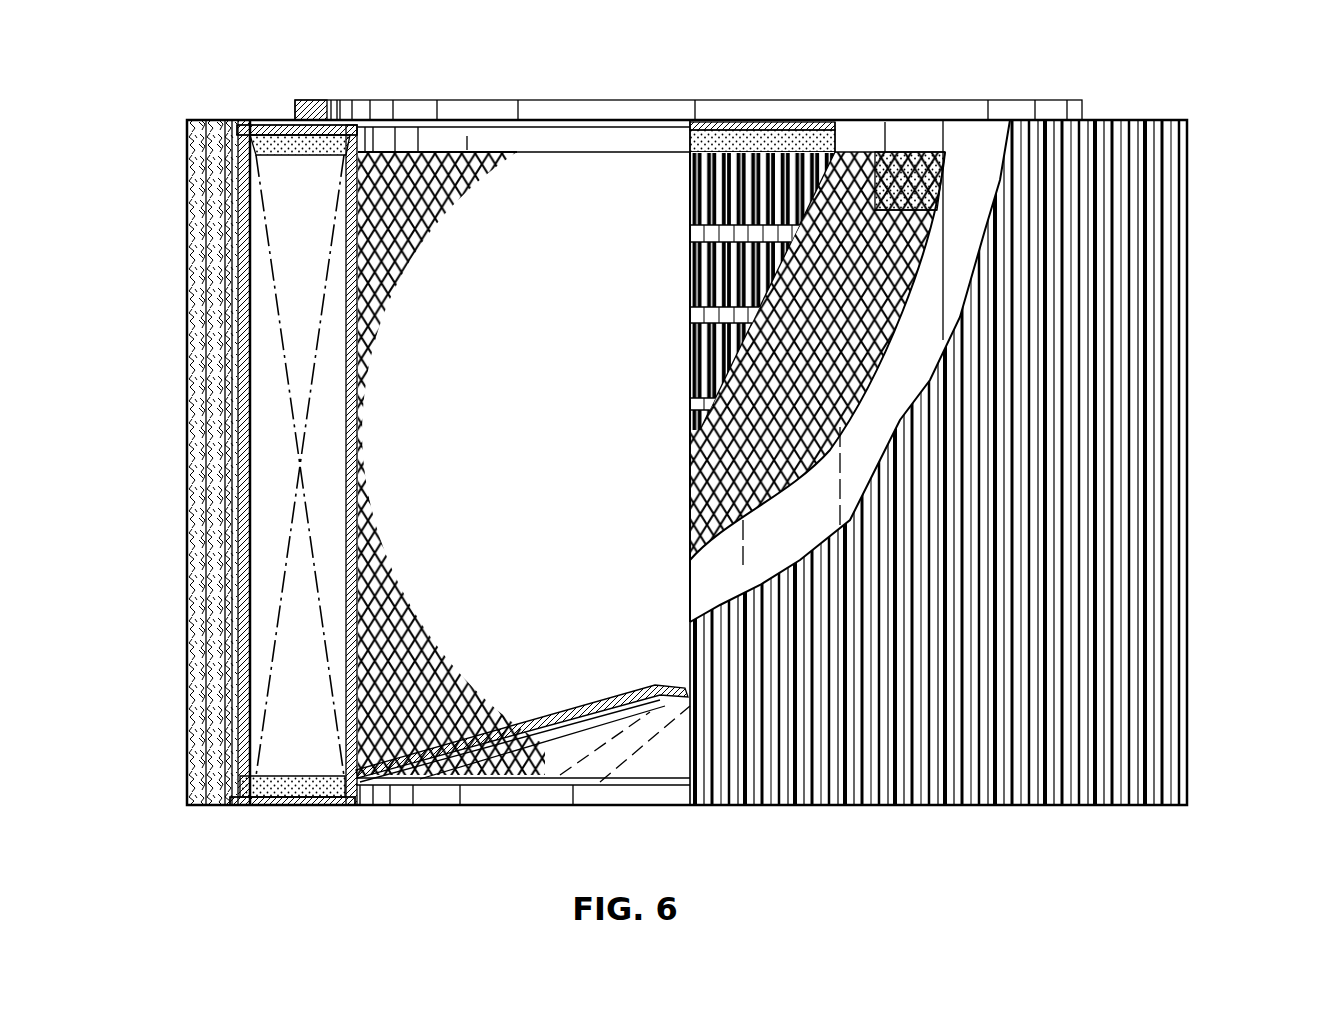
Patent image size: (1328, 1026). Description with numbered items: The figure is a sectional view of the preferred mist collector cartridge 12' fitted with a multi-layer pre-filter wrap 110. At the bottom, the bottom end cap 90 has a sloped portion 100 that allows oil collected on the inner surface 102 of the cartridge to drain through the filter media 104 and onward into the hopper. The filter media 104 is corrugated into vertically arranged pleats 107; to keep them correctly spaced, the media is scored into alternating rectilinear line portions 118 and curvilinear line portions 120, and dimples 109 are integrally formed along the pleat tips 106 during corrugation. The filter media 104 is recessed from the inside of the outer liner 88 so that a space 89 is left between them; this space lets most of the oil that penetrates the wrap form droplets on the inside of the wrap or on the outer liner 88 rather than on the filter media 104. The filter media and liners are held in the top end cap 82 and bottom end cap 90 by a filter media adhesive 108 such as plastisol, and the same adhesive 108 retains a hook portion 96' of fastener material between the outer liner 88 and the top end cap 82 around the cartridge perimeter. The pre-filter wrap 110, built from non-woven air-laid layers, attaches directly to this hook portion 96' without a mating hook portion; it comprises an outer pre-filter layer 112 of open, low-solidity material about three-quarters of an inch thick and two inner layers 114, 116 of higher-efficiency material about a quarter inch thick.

The mist collector cartridge 12' is at (749, 435).
The top end cap 82 is at (268, 168).
The outer liner 88 is at (243, 343).
The space 89 is at (247, 468).
The bottom end cap 90 is at (347, 812).
The hook portion 96' is at (536, 434).
The sloped portion 100 is at (577, 727).
The inner surface 102 is at (355, 415).
The filter media 104 is at (250, 136).
The pleat tips 106 is at (778, 170).
The pleats 107 is at (688, 352).
The filter media adhesive 108 is at (332, 116).
The dimples 109 is at (733, 235).
The pre-filter wrap 110 is at (1188, 308).
The outer pre-filter layer 112 is at (180, 807).
The inner layer 114 is at (205, 805).
The inner layer 116 is at (225, 807).
The rectilinear line portions 118 is at (707, 185).
The curvilinear line portions 120 is at (698, 232).